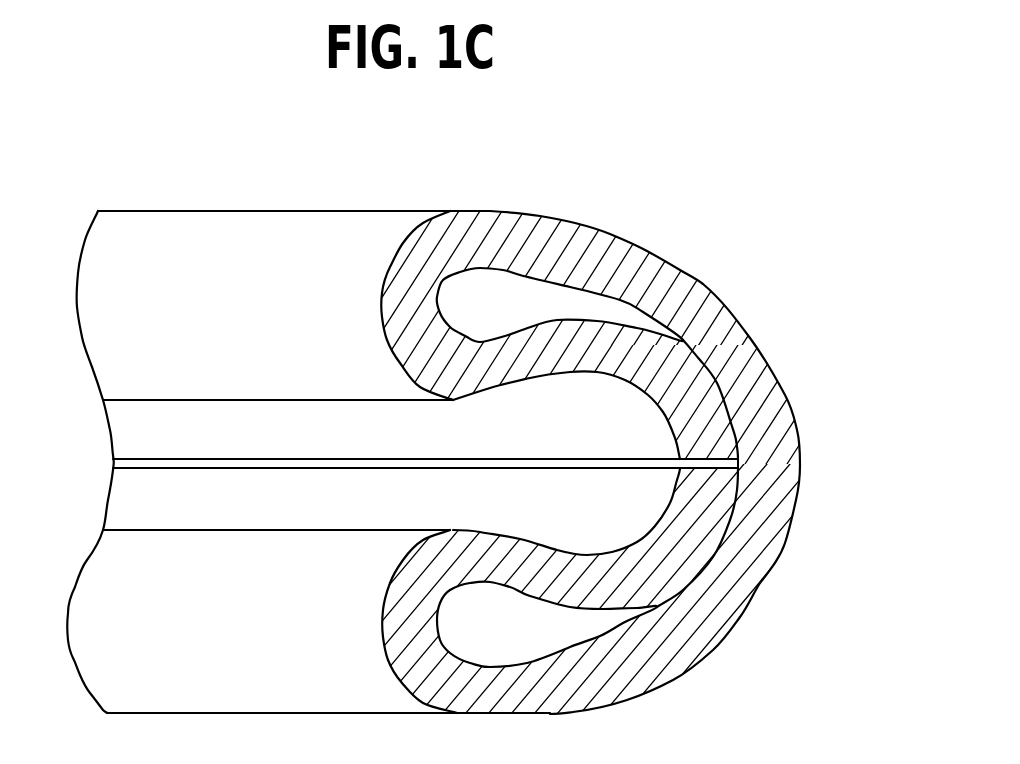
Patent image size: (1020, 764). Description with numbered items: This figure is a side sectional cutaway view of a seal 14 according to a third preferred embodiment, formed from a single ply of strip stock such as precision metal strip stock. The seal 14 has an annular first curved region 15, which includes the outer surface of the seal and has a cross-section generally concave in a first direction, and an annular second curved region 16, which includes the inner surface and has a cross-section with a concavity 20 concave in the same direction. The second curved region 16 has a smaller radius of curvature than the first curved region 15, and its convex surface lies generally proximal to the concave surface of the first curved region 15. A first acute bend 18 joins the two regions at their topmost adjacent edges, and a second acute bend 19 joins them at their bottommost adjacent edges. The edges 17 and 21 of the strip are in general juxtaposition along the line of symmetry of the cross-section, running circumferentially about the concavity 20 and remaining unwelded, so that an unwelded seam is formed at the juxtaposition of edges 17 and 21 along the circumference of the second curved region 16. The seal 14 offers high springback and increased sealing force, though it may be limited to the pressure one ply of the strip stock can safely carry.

The seal 14 is at (760, 267).
The first curved region 15 is at (787, 383).
The second curved region 16 is at (648, 535).
The edge 17 is at (130, 459).
The first acute bend 18 is at (377, 315).
The second acute bend 19 is at (385, 600).
The concavity 20 is at (600, 435).
The edge 21 is at (147, 468).